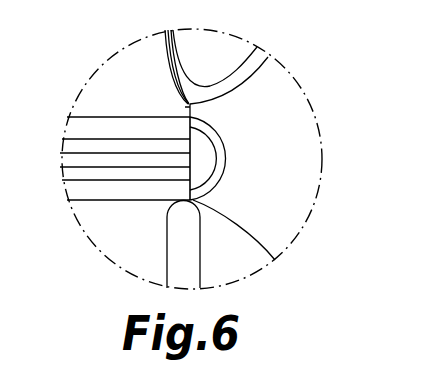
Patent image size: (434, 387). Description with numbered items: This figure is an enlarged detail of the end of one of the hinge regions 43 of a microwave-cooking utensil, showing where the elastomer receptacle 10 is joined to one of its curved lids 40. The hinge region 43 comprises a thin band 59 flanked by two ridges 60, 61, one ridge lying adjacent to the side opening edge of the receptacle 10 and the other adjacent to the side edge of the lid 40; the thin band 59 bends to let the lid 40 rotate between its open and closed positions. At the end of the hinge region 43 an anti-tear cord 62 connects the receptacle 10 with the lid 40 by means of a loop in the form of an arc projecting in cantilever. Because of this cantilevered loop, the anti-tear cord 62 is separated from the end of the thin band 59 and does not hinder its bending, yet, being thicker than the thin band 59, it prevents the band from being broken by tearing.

The receptacle 10 is at (110, 67).
The lid 40 is at (118, 243).
The hinge region 43 is at (270, 169).
The thin band 59 is at (95, 162).
The ridge 60 is at (115, 145).
The ridge 61 is at (118, 173).
The anti-tear cord 62 is at (227, 145).